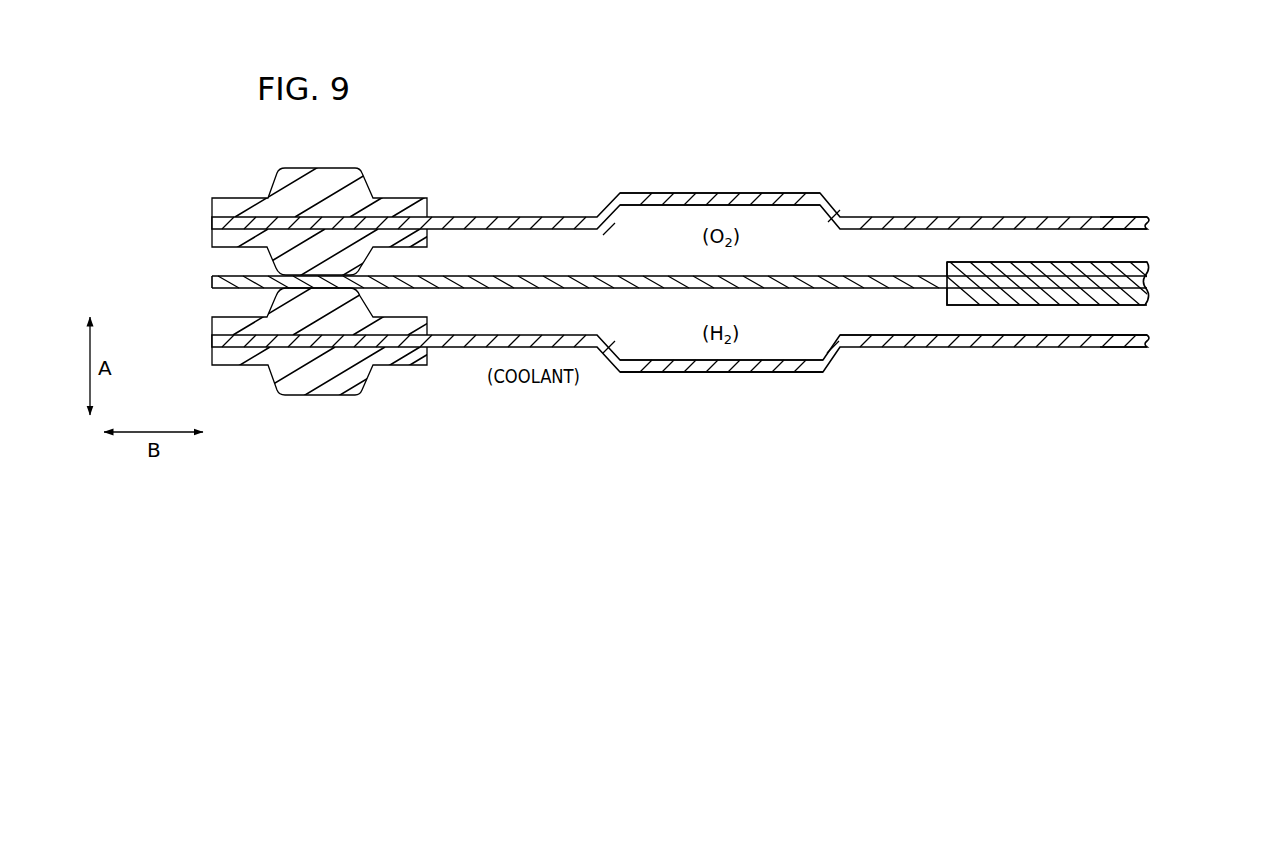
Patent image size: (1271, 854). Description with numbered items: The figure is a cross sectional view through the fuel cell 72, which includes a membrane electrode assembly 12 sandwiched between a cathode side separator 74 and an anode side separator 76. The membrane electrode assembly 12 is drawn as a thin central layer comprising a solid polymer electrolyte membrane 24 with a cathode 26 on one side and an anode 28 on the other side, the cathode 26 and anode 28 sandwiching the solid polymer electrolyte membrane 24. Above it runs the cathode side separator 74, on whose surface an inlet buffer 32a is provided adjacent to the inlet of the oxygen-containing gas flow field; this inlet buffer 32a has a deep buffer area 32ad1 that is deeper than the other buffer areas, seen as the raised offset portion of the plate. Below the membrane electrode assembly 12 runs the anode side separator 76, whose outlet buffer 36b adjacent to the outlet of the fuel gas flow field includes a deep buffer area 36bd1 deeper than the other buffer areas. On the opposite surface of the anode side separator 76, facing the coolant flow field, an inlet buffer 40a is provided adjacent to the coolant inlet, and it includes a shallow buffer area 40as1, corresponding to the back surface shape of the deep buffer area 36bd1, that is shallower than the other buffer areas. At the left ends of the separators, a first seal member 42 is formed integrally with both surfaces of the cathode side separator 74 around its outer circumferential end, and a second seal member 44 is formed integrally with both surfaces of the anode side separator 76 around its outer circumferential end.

The membrane electrode assembly 12 is at (1213, 268).
The solid polymer electrolyte membrane 24 is at (1132, 283).
The cathode 26 is at (1141, 268).
The anode 28 is at (1142, 297).
The inlet buffer 32a is at (880, 234).
The deep buffer area 32ad1 is at (657, 213).
The outlet buffer 36b is at (893, 336).
The deep buffer area 36bd1 is at (688, 360).
The inlet buffer 40a is at (865, 349).
The shallow buffer area 40as1 is at (656, 373).
The first seal member 42 is at (229, 203).
The second seal member 44 is at (229, 323).
The fuel cell 72 is at (505, 131).
The cathode side separator 74 is at (1139, 215).
The anode side separator 76 is at (1139, 354).